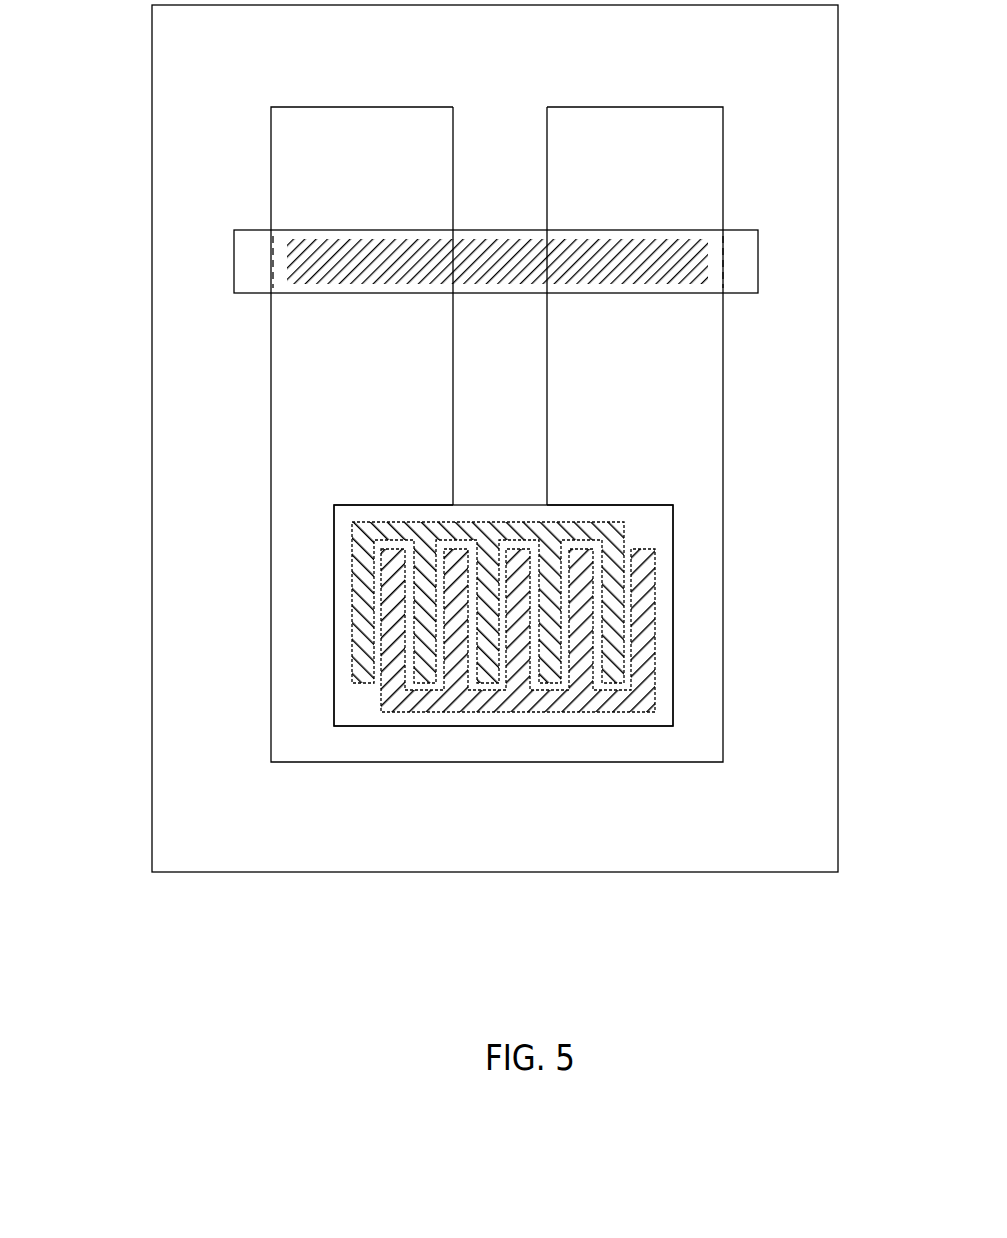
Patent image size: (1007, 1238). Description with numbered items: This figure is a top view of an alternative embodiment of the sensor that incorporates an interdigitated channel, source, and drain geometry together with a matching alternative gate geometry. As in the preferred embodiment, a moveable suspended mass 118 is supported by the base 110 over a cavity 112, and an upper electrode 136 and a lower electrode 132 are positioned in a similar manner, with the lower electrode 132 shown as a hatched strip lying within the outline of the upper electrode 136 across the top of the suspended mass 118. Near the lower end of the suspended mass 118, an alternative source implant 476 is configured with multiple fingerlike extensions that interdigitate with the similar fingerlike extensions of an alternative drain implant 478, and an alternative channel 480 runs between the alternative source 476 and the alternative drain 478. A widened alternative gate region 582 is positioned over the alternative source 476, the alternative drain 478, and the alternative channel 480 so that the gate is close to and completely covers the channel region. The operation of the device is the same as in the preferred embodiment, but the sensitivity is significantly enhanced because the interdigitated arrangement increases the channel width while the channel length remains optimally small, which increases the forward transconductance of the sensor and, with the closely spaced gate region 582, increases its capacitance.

The base 110 is at (173, 573).
The cavity 112 is at (313, 342).
The moveable suspended mass 118 is at (492, 403).
The lower electrode 132 is at (315, 263).
The upper electrode 136 is at (250, 240).
The alternative source implant 476 is at (355, 673).
The alternative drain implant 478 is at (450, 698).
The alternative channel 480 is at (380, 687).
The widened alternative gate region 582 is at (665, 717).